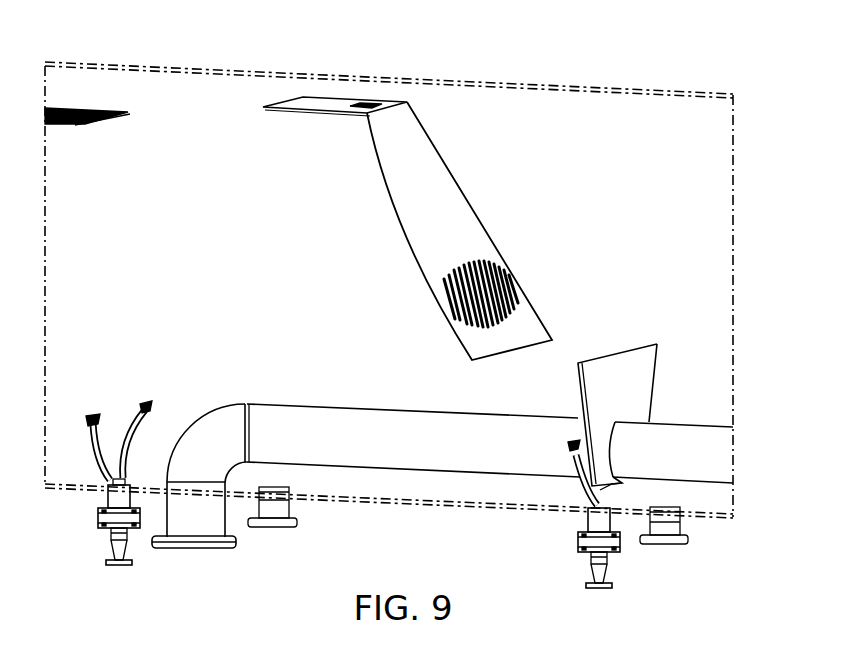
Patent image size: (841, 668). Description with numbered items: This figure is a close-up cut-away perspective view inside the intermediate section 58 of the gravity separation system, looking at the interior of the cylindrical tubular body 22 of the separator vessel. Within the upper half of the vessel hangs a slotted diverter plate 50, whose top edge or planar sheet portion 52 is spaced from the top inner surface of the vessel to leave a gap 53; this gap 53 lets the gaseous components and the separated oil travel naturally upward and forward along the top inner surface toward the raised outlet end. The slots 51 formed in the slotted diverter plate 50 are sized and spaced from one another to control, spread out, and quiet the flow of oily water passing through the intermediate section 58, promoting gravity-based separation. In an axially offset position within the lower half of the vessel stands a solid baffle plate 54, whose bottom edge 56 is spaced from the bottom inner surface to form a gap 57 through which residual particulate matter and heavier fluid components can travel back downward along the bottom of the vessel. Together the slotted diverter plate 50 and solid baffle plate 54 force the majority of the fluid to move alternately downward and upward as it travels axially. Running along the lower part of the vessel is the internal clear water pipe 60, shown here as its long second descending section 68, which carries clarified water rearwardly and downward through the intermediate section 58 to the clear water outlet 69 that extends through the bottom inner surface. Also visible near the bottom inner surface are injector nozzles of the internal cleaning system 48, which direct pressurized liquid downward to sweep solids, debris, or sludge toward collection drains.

The cylindrical tubular body 22 is at (388, 80).
The internal cleaning system 48 is at (76, 458).
The slotted diverter plate 50 is at (447, 187).
The slots 51 is at (508, 295).
The planar sheet portion 52 is at (313, 113).
The gap 53 is at (291, 88).
The solid baffle plate 54 is at (637, 373).
The bottom edge 56 is at (608, 490).
The gap 57 is at (629, 495).
The intermediate section 58 is at (621, 109).
The internal clear water pipe 60 is at (361, 475).
The second descending section 68 is at (333, 405).
The clear water outlet 69 is at (202, 563).